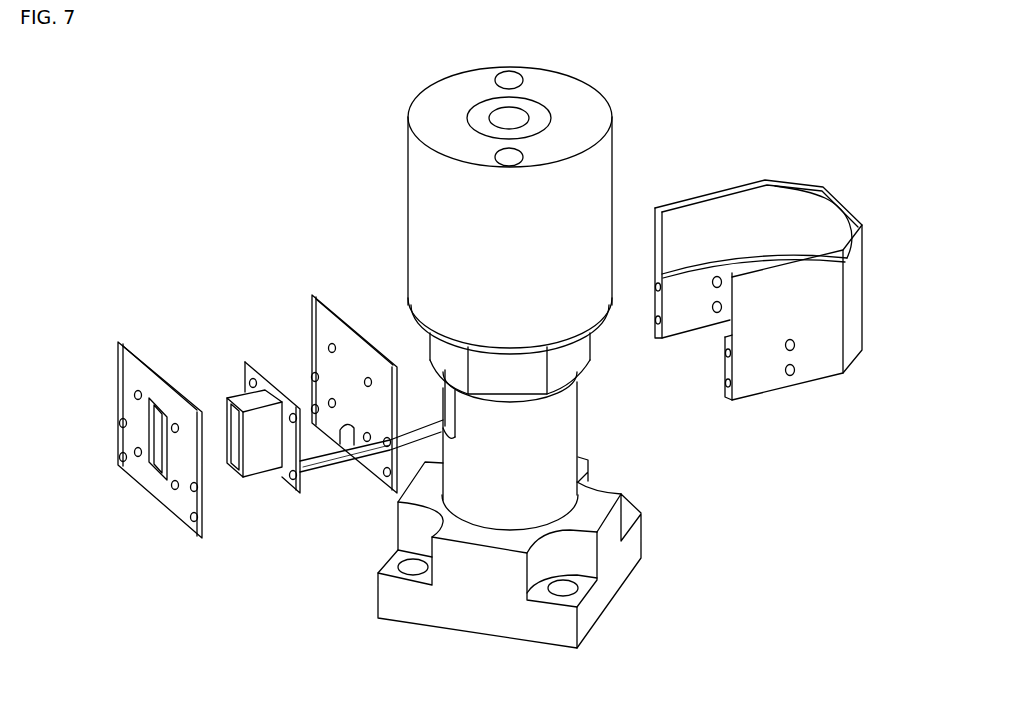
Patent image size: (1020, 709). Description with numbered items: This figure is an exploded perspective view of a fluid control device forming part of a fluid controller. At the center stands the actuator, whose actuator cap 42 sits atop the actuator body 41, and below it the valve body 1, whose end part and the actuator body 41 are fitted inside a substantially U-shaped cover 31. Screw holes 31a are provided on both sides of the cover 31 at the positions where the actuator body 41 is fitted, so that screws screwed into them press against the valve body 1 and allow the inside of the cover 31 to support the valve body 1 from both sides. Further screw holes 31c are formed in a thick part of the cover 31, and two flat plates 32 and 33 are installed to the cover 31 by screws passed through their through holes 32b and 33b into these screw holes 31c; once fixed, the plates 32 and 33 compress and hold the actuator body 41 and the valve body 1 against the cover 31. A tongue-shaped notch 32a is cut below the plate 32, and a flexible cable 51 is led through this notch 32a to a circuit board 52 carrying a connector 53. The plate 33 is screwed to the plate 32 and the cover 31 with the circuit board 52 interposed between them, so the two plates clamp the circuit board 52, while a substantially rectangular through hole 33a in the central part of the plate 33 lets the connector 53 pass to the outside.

The valve body 1 is at (642, 523).
The cover 31 is at (827, 191).
The screw holes 31a is at (722, 285).
The screw holes 31c is at (662, 298).
The plate 32 is at (313, 295).
The notch 32a is at (368, 432).
The through holes 32b is at (332, 344).
The plate 33 is at (118, 343).
The through hole 33a is at (150, 460).
The through holes 33b is at (120, 424).
The actuator body 41 is at (590, 358).
The actuator cap 42 is at (407, 155).
The flexible cable 51 is at (436, 422).
The circuit board 52 is at (288, 490).
The connector 53 is at (228, 398).